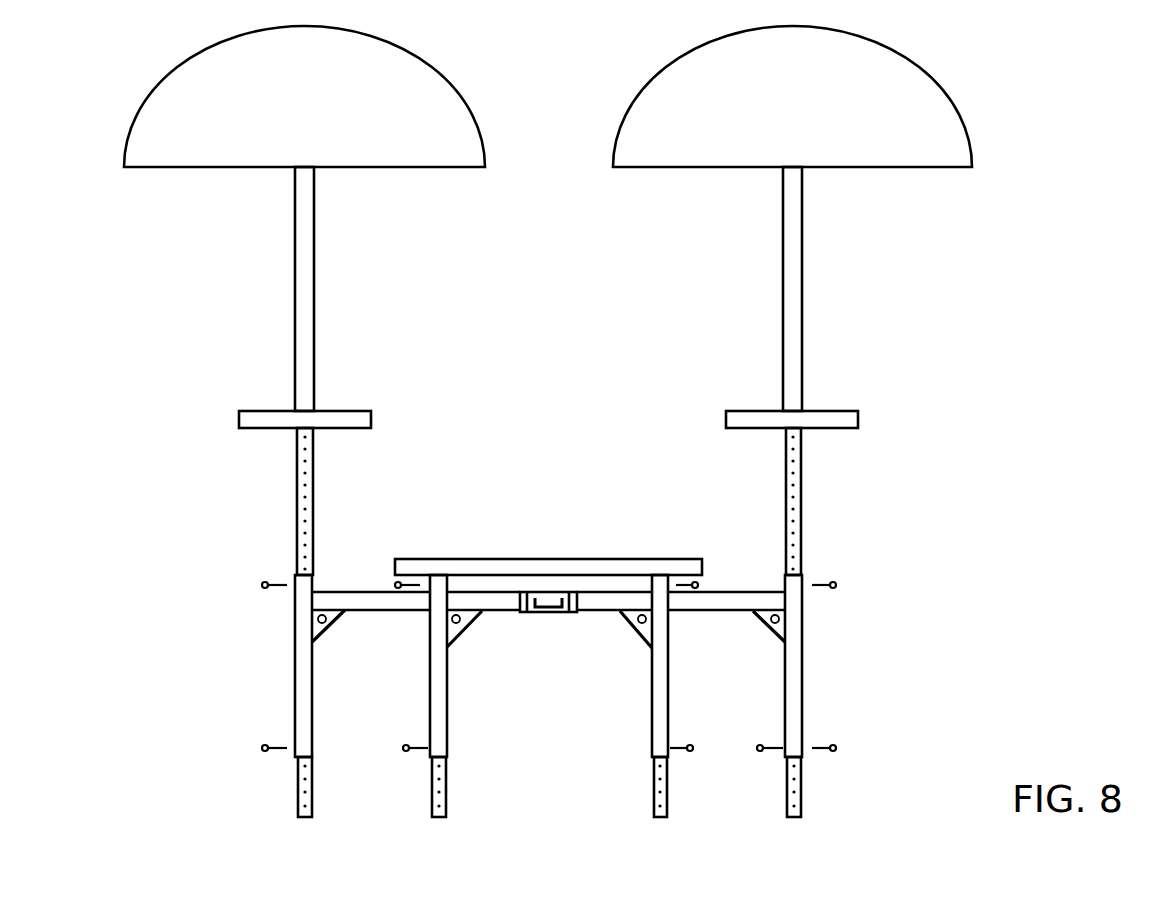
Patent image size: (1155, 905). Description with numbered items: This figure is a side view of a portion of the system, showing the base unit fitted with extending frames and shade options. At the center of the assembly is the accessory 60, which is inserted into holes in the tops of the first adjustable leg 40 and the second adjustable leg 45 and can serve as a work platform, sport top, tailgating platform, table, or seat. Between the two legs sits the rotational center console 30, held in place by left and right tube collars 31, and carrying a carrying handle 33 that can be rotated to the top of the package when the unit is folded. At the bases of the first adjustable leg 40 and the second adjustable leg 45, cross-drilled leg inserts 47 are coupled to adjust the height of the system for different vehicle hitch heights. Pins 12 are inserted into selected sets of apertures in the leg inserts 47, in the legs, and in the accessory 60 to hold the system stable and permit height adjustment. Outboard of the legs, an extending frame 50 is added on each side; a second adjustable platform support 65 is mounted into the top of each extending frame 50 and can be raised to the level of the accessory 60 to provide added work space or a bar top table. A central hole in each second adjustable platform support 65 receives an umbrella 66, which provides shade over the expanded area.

The pins 12 is at (265, 582).
The rotational center console 30 is at (552, 613).
The tube collars 31 is at (523, 613).
The carrying handle 33 is at (544, 613).
The first adjustable leg 40 is at (430, 655).
The second adjustable leg 45 is at (668, 637).
The leg inserts 47 is at (312, 772).
The extending frame 50 is at (295, 633).
The accessory 60 is at (540, 559).
The second adjustable platform support 65 is at (270, 411).
The umbrella 66 is at (465, 100).